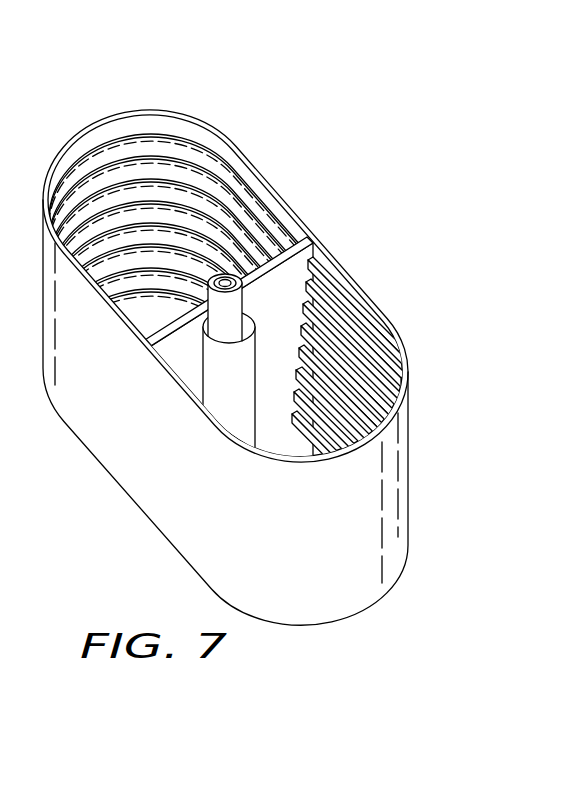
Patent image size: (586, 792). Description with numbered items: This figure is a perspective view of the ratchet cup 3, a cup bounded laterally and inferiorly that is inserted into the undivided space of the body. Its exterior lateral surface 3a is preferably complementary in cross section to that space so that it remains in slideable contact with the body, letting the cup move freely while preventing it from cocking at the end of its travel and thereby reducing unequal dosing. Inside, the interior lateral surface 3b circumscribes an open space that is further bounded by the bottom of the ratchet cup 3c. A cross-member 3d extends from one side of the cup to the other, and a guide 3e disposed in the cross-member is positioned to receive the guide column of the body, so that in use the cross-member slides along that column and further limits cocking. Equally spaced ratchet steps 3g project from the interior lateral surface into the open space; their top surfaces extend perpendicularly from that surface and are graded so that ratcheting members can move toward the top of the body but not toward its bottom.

The ratchet cup 3 is at (259, 334).
The exterior lateral surface 3a is at (409, 484).
The interior lateral surface 3b is at (108, 128).
The bottom of the ratchet cup 3c is at (378, 369).
The cross-member 3d is at (312, 236).
The guide 3e is at (225, 280).
The ratchet steps 3g is at (378, 306).